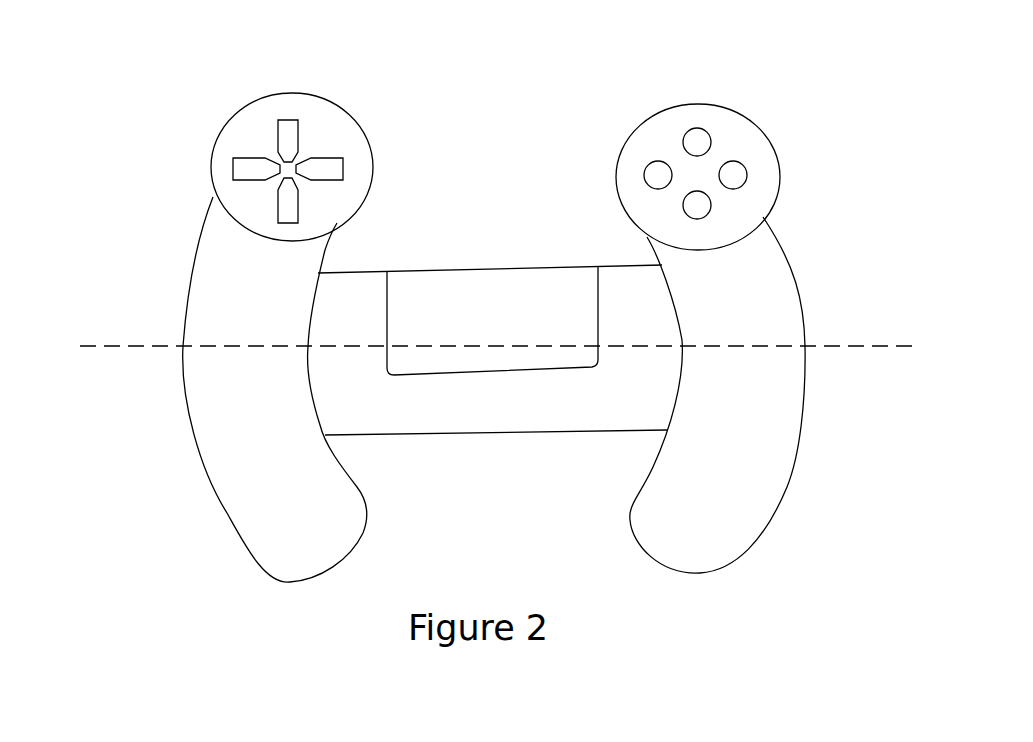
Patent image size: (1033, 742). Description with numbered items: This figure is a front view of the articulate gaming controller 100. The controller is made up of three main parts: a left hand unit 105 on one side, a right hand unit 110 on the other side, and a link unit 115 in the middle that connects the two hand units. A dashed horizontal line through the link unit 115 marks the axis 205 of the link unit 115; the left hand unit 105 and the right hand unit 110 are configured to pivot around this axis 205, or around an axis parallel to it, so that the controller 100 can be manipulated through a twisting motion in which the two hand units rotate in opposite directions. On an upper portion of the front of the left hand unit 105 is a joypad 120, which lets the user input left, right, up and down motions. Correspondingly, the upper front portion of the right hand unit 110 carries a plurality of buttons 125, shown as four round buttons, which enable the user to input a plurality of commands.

The articulate gaming controller 100 is at (142, 143).
The left hand unit 105 is at (182, 385).
The right hand unit 110 is at (807, 430).
The link unit 115 is at (504, 400).
The joypad 120 is at (302, 123).
The buttons 125 is at (710, 130).
The axis 205 is at (842, 345).